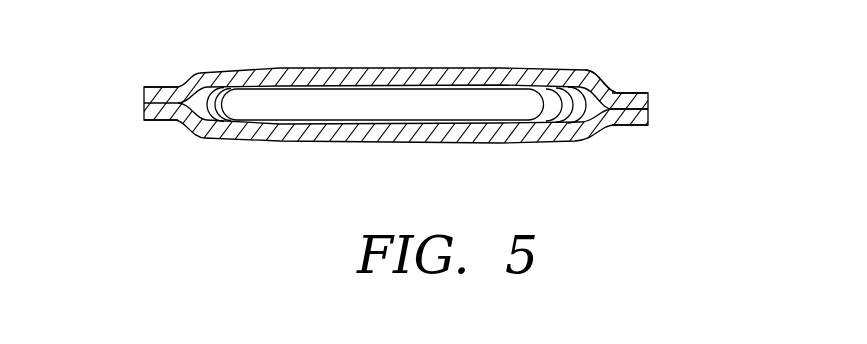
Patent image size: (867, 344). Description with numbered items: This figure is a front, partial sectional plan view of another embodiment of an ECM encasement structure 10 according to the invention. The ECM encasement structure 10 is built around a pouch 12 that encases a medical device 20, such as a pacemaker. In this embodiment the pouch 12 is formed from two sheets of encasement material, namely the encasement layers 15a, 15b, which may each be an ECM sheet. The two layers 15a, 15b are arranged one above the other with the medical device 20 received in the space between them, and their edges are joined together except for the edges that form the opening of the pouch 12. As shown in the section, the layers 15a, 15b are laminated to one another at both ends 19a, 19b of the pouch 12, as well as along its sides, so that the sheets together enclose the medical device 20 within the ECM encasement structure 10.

The ECM encasement structure 10 is at (272, 42).
The pouch 12 is at (548, 70).
The encasement layer 15a is at (620, 92).
The encasement layer 15b is at (605, 136).
The end 19a is at (145, 87).
The end 19b is at (648, 124).
The medical device 20 is at (260, 108).